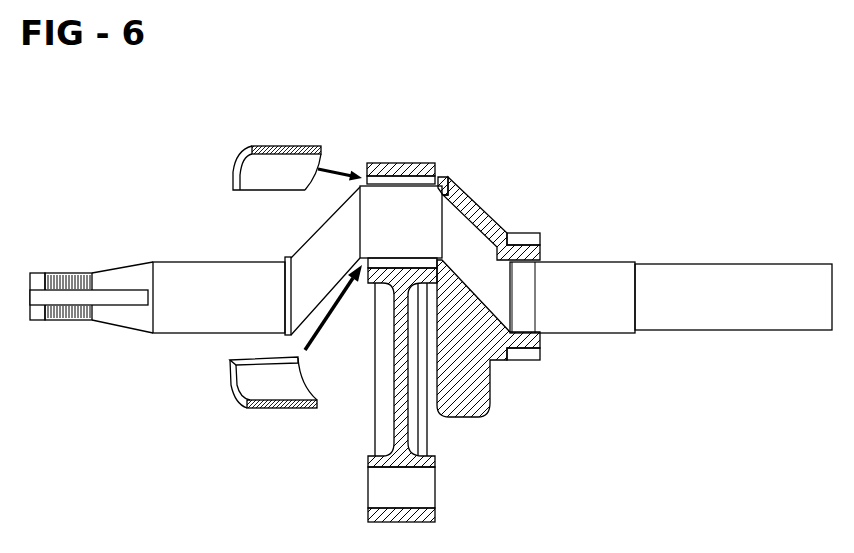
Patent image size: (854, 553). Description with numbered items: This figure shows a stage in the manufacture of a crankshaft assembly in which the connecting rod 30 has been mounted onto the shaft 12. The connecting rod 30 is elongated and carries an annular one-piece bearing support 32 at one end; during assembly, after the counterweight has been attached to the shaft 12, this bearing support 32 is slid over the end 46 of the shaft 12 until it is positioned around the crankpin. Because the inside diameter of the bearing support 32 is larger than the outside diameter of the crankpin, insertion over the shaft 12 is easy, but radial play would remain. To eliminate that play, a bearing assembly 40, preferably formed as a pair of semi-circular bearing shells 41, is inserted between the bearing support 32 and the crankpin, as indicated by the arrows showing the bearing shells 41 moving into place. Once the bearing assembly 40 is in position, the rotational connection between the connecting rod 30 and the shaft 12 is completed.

The shaft 12 is at (597, 262).
The connecting rod 30 is at (395, 423).
The bearing support 32 is at (413, 162).
The bearing assembly 40 is at (200, 381).
The bearing shells 41 is at (233, 172).
The end of the shaft 46 is at (55, 327).